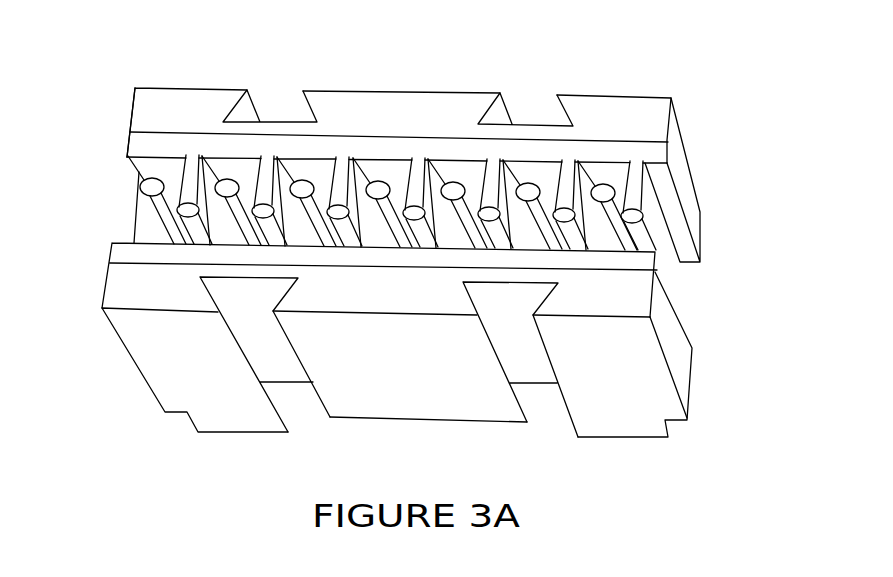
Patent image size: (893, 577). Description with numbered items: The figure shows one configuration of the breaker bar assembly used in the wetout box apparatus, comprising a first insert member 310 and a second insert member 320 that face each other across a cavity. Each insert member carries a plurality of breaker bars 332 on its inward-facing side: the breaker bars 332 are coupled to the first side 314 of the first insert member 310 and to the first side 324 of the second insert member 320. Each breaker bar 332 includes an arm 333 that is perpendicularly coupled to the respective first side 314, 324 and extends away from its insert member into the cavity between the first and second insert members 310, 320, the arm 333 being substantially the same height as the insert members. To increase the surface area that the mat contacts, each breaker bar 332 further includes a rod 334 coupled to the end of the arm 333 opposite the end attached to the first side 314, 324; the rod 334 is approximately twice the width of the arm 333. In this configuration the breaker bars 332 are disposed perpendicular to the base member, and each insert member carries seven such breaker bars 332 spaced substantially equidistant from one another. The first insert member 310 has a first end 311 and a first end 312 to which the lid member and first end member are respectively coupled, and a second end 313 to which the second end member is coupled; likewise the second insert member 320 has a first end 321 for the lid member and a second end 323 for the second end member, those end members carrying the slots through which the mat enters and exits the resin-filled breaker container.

The first insert member 310 is at (408, 140).
The first end of the first insert member 311 is at (617, 103).
The first end of the first insert member 312 is at (130, 122).
The second end of the first insert member 313 is at (667, 140).
The first side of the first insert member 314 is at (472, 170).
The second insert member 320 is at (397, 358).
The first end of the second insert member 321 is at (105, 275).
The second end of the second insert member 323 is at (688, 330).
The first side of the second insert member 324 is at (330, 253).
The breaker bar 332 is at (138, 188).
The arm 333 is at (137, 223).
The rod 334 is at (170, 172).